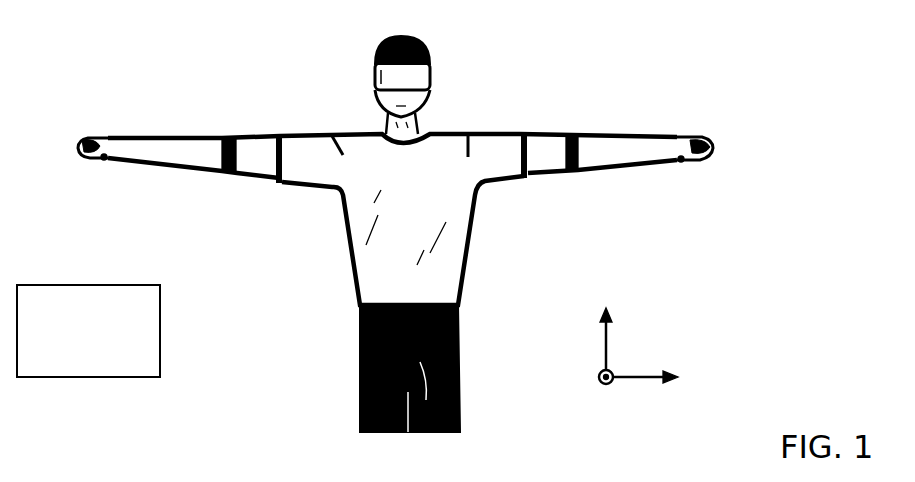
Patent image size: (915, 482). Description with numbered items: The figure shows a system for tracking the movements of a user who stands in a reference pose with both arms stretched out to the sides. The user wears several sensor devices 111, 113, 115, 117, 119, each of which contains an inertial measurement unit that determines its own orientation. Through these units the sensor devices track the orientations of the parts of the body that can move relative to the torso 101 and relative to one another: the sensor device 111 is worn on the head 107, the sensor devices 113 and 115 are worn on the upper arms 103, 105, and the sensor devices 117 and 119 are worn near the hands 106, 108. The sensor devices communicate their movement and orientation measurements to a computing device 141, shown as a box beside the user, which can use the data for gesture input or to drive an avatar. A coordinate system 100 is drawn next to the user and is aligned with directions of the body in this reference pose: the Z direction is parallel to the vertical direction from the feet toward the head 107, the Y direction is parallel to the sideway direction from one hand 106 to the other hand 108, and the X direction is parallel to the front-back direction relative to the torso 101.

The coordinate system 100 is at (608, 345).
The torso 101 is at (473, 240).
The upper arm 103 is at (558, 176).
The upper arm 105 is at (245, 180).
The hand 106 is at (108, 130).
The head 107 is at (372, 58).
The hand 108 is at (690, 135).
The sensor device 111 is at (430, 80).
The sensor device 113 is at (572, 133).
The sensor device 115 is at (223, 133).
The sensor device 117 is at (106, 162).
The sensor device 119 is at (683, 163).
The computing device 141 is at (88, 331).